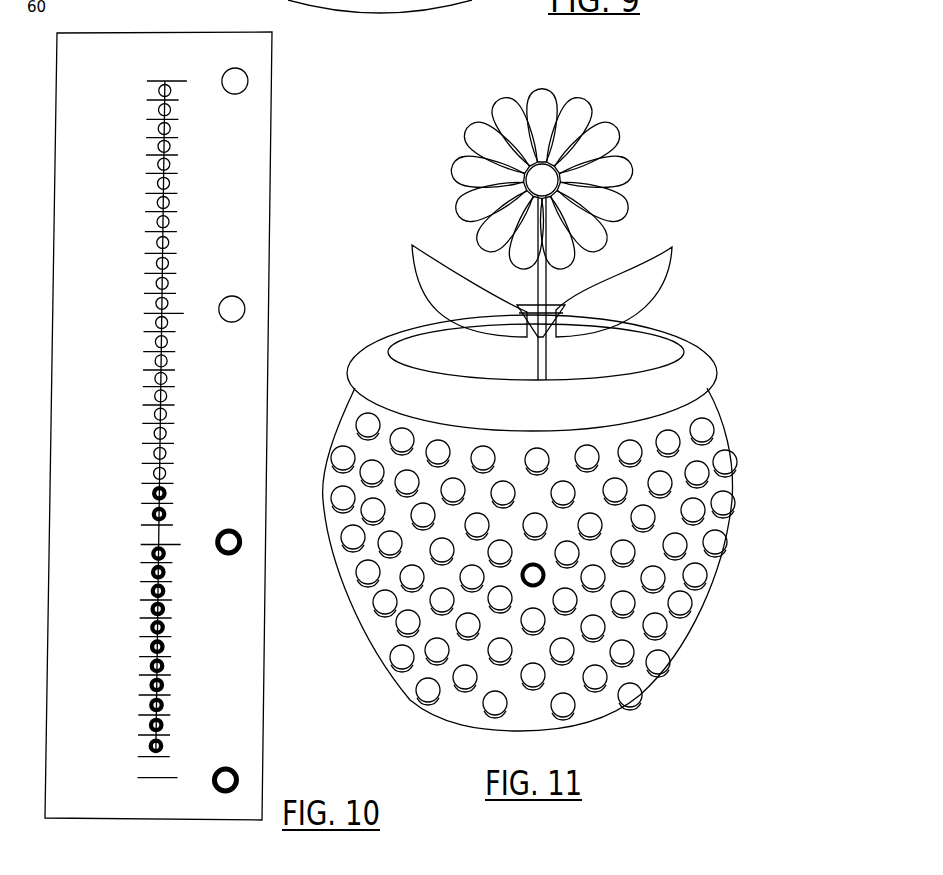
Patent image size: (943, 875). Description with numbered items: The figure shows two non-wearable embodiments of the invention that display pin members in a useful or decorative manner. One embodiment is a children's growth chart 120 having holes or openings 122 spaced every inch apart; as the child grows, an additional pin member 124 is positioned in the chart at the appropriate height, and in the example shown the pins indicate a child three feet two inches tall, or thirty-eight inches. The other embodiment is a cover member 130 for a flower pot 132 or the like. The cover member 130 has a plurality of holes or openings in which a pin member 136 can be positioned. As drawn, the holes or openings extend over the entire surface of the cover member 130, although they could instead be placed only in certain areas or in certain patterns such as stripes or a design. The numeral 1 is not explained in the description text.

In FIG. 10, the children's growth chart 120 is at (146, 426).
In FIG. 10, the holes or openings 122 is at (173, 358).
In FIG. 10, the pin member 124 is at (173, 607).
In FIG. 11, the cover member 130 is at (388, 628).
In FIG. 11, the flower pot 132 is at (693, 352).
In FIG. 11, the pin member 136 is at (538, 588).
In FIG. 11, the apertures 1 is at (731, 498).